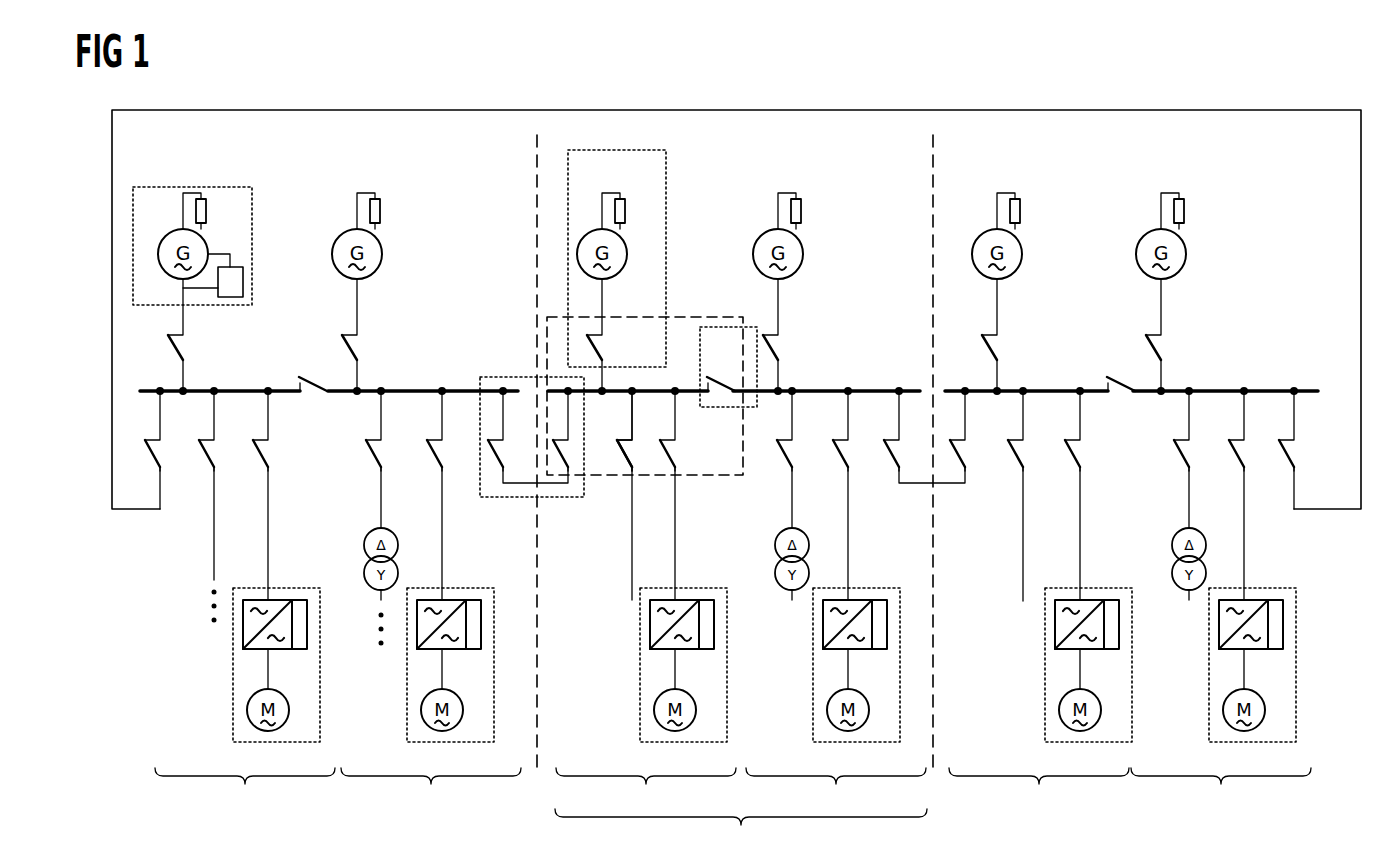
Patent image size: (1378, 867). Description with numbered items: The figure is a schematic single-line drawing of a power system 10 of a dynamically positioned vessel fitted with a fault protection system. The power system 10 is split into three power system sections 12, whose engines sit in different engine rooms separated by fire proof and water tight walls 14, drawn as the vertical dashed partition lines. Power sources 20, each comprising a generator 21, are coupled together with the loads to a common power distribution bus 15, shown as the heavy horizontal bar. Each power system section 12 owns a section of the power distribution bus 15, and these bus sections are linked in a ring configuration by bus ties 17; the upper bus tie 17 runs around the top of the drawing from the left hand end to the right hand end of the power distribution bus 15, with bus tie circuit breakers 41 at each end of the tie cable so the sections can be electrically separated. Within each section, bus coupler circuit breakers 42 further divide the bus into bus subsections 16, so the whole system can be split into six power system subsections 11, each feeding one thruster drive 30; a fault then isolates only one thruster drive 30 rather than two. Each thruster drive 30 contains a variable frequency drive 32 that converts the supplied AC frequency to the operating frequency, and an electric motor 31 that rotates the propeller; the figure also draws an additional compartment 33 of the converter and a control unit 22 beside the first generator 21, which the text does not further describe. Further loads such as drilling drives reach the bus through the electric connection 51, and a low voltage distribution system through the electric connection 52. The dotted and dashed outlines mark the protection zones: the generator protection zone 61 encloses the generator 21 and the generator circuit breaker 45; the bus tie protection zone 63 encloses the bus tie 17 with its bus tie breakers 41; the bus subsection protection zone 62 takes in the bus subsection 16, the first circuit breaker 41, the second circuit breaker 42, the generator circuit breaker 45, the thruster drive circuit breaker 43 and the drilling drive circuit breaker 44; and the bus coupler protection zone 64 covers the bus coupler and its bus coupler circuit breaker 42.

The power system 10 is at (238, 78).
The power system subsection 11 is at (733, 781).
The power system section 12 is at (741, 832).
The fire proof and water tight wall 14 is at (538, 731).
The power distribution bus 15 is at (105, 367).
The bus subsection 16 is at (247, 390).
The bus tie 17 is at (903, 110).
The power source 20 is at (243, 187).
The generator 21 is at (207, 246).
The generator control unit 22 is at (243, 282).
The thruster drive 30 is at (232, 682).
The electric motor 31 is at (247, 719).
The variable frequency drive 32 is at (242, 636).
The converter control unit 33 is at (297, 650).
The bus tie circuit breaker 41 is at (490, 456).
The bus coupler circuit breaker 42 is at (714, 380).
The thruster drive circuit breaker 43 is at (668, 458).
The drilling drive circuit breaker 44 is at (626, 458).
The generator circuit breaker 45 is at (598, 347).
The electric connection 51 is at (213, 557).
The electric connection 52 is at (380, 506).
The generator protection zone 61 is at (666, 190).
The bus subsection protection zone 62 is at (718, 318).
The bus tie protection zone 63 is at (496, 376).
The bus coupler protection zone 64 is at (722, 410).